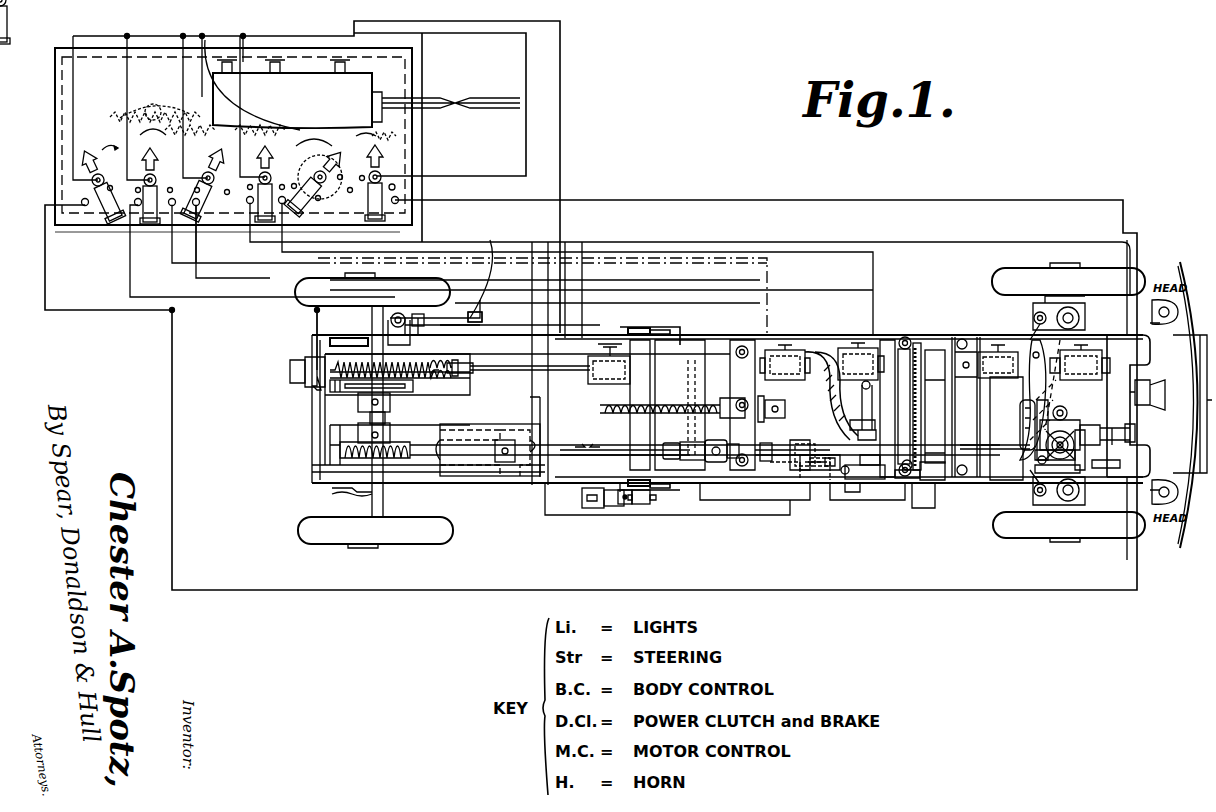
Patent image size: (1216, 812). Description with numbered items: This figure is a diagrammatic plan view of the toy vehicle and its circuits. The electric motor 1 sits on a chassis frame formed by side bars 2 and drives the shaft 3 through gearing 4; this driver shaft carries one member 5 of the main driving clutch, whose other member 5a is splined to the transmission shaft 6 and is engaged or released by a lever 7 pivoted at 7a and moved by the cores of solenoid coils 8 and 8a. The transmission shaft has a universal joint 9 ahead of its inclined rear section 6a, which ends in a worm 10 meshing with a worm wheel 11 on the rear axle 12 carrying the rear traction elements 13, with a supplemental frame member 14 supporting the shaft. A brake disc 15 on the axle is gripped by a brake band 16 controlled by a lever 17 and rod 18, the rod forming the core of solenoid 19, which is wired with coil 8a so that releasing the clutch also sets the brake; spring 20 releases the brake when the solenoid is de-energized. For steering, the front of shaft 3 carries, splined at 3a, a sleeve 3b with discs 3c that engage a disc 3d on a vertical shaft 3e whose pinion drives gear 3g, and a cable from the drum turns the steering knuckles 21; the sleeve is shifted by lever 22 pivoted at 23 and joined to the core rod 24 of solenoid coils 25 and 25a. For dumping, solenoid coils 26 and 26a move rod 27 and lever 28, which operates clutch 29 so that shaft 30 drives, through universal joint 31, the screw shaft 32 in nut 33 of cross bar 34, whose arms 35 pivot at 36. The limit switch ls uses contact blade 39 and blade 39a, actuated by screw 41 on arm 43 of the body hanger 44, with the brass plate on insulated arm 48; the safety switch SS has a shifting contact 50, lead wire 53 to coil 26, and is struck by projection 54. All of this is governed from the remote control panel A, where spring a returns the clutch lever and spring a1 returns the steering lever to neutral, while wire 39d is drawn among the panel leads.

The electric motor 1 is at (935, 406).
The side bars 2 is at (883, 345).
The shaft 3 is at (1005, 455).
The spline 3a is at (1080, 455).
The sleeve 3b is at (1039, 483).
The discs 3c is at (1060, 455).
The disc 3d is at (1087, 410).
The vertical shaft 3e is at (1085, 438).
The gear 3g is at (1105, 390).
The gearing 4 is at (920, 428).
The member of main driving clutch 5 is at (918, 444).
The member of main driving clutch 5a is at (895, 470).
The transmission shaft 6 is at (781, 447).
The rear downwardly inclined section 6a is at (643, 454).
The lever 7 is at (840, 416).
The pivot 7a is at (845, 475).
The solenoid coil 8 is at (850, 350).
The solenoid coil 8a is at (788, 350).
The universal joint 9 is at (720, 444).
The worm 10 is at (390, 467).
The worm wheel 11 is at (322, 464).
The rear axle 12 is at (373, 505).
The rear traction elements 13 is at (320, 304).
The supplemental frame member 14 is at (520, 460).
The brake disc 15 is at (400, 392).
The brake band 16 is at (367, 390).
The lever 17 is at (440, 380).
The rod 18 is at (517, 370).
The solenoid 19 is at (590, 380).
The spring 20 is at (395, 360).
The steering knuckles 21 is at (1033, 300).
The lever 22 is at (1040, 395).
The pivot 23 is at (1038, 423).
The core rod 24 is at (1028, 352).
The solenoid coil 25 is at (970, 352).
The solenoid coil 25a is at (1085, 350).
The solenoid coil 26 is at (926, 478).
The solenoid coil 26a is at (810, 482).
The rod 27 is at (884, 480).
The lever 28 is at (867, 386).
The clutch 29 is at (913, 340).
The shaft 30 is at (778, 404).
The universal joint 31 is at (750, 393).
The screw shaft 32 is at (720, 375).
The nut 33 is at (727, 400).
The cross bar 34 is at (690, 368).
The arms 35 is at (672, 333).
The pivot 36 is at (640, 330).
The contact blade 39 is at (425, 326).
The contact blade 39a is at (465, 326).
The light switch wire 39d is at (238, 252).
The upper screw 41 is at (412, 338).
The arm 43 is at (360, 330).
The hanger 44 is at (320, 340).
The insulated arm 48 is at (835, 424).
The shifting contact 50 is at (630, 507).
The lead wire 53 is at (695, 516).
The projection 54 is at (640, 508).
The safety switch SS is at (614, 510).
The remote control panel A is at (280, 166).
The spring a is at (270, 125).
The spring a1 is at (155, 106).
The limit switch ls is at (506, 254).